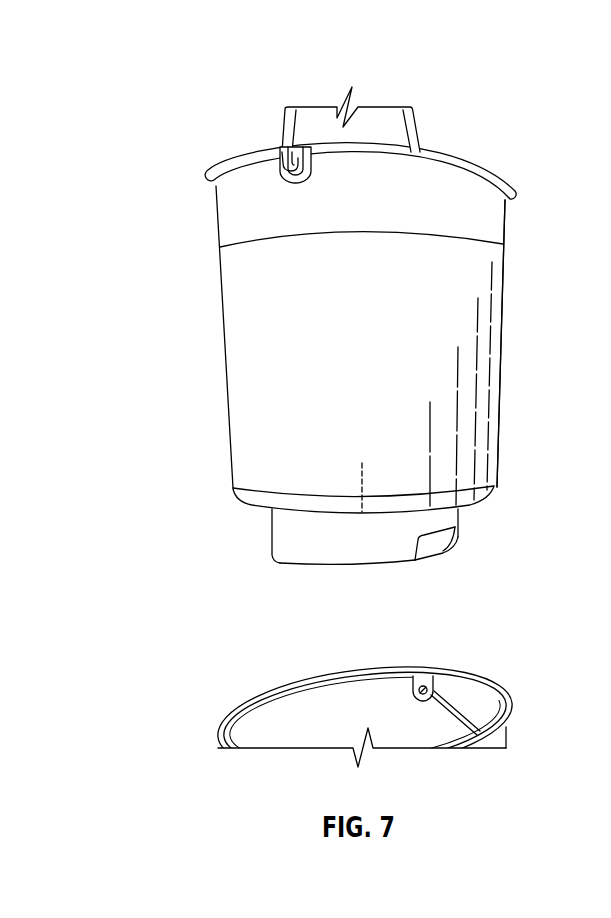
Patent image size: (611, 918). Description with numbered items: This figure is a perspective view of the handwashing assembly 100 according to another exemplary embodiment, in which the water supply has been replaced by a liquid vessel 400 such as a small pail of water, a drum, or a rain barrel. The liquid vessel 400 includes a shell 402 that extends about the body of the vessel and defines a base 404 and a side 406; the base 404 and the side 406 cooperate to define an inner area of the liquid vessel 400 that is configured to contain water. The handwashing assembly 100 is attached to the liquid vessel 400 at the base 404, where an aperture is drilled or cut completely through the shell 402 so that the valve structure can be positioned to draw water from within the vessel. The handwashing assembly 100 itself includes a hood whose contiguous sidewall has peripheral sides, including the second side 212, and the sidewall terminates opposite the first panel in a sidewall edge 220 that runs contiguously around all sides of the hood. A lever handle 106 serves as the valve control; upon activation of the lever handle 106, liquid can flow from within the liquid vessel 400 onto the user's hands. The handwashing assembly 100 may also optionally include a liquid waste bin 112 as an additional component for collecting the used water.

The handwashing assembly 100 is at (363, 358).
The lever handle 106 is at (457, 553).
The liquid waste bin 112 is at (507, 685).
The second side 212 is at (373, 549).
The sidewall edge 220 is at (293, 566).
The liquid vessel 400 is at (505, 323).
The shell 402 is at (512, 235).
The base 404 is at (257, 510).
The side 406 is at (497, 430).